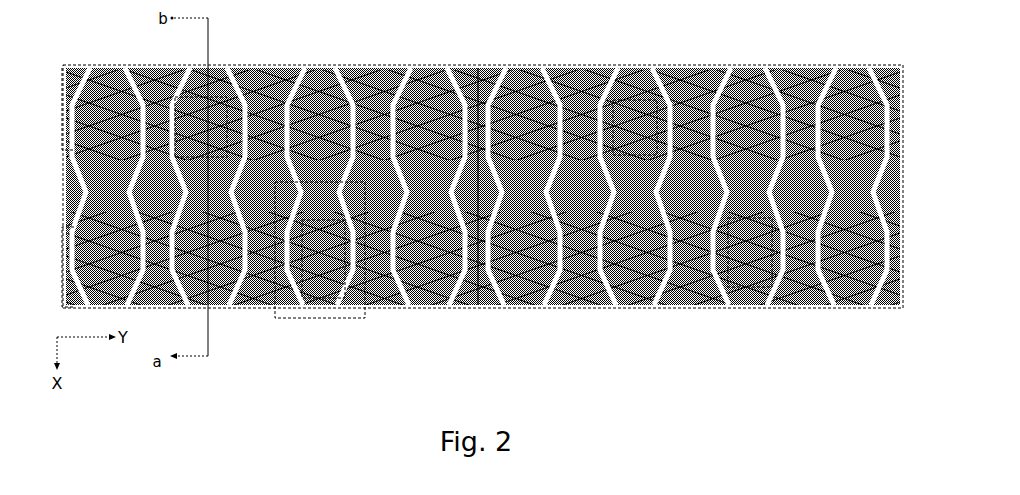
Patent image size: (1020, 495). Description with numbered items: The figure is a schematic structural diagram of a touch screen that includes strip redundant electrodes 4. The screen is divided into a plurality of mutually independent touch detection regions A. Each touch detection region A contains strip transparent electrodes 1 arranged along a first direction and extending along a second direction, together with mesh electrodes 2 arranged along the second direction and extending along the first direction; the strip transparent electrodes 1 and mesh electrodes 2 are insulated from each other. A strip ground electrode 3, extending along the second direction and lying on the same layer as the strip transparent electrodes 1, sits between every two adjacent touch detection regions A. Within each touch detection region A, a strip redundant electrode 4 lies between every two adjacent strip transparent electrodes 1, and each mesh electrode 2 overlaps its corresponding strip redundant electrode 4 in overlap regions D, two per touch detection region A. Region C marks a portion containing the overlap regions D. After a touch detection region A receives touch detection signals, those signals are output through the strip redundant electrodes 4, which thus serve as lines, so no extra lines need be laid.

The strip transparent electrode 1 is at (160, 65).
The mesh electrode 2 is at (63, 115).
The strip ground electrode 3 is at (112, 64).
The strip redundant electrode 4 is at (323, 65).
The touch detection region A is at (66, 199).
The region C is at (320, 323).
The overlap region D is at (68, 166).